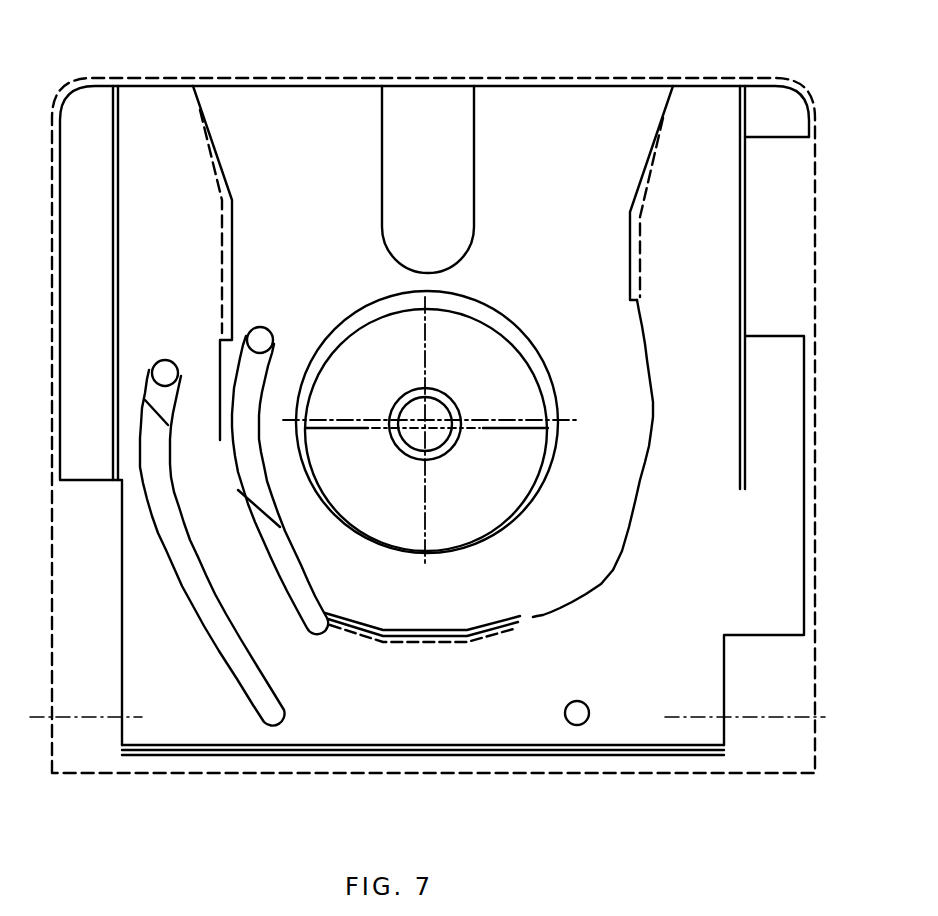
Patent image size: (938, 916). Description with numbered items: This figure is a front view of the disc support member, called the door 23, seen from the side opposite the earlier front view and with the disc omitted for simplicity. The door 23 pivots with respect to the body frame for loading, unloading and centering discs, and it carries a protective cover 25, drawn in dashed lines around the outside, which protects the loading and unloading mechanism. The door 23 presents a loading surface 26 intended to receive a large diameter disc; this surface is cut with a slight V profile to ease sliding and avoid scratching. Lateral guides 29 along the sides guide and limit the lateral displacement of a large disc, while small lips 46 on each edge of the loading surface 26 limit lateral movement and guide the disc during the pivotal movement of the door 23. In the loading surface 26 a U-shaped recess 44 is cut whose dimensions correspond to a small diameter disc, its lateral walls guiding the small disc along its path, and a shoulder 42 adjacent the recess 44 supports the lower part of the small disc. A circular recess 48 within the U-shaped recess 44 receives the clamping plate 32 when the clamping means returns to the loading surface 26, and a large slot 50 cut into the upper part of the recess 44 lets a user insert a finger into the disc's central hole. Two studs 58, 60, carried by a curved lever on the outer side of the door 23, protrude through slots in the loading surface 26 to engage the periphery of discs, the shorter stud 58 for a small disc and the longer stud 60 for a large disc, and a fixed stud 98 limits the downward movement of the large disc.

The door 23 is at (56, 88).
The protective cover 25 is at (53, 621).
The loading surface 26 is at (783, 540).
The lateral guides 29 is at (113, 318).
The clamping plate 32 is at (487, 510).
The shoulder 42 is at (440, 638).
The U-shaped recess 44 is at (625, 470).
The small lips 46 is at (230, 202).
The circular recess 48 is at (347, 329).
The large slot 50 is at (455, 198).
The stud 58 is at (259, 339).
The stud 60 is at (165, 373).
The fixed stud 98 is at (577, 713).